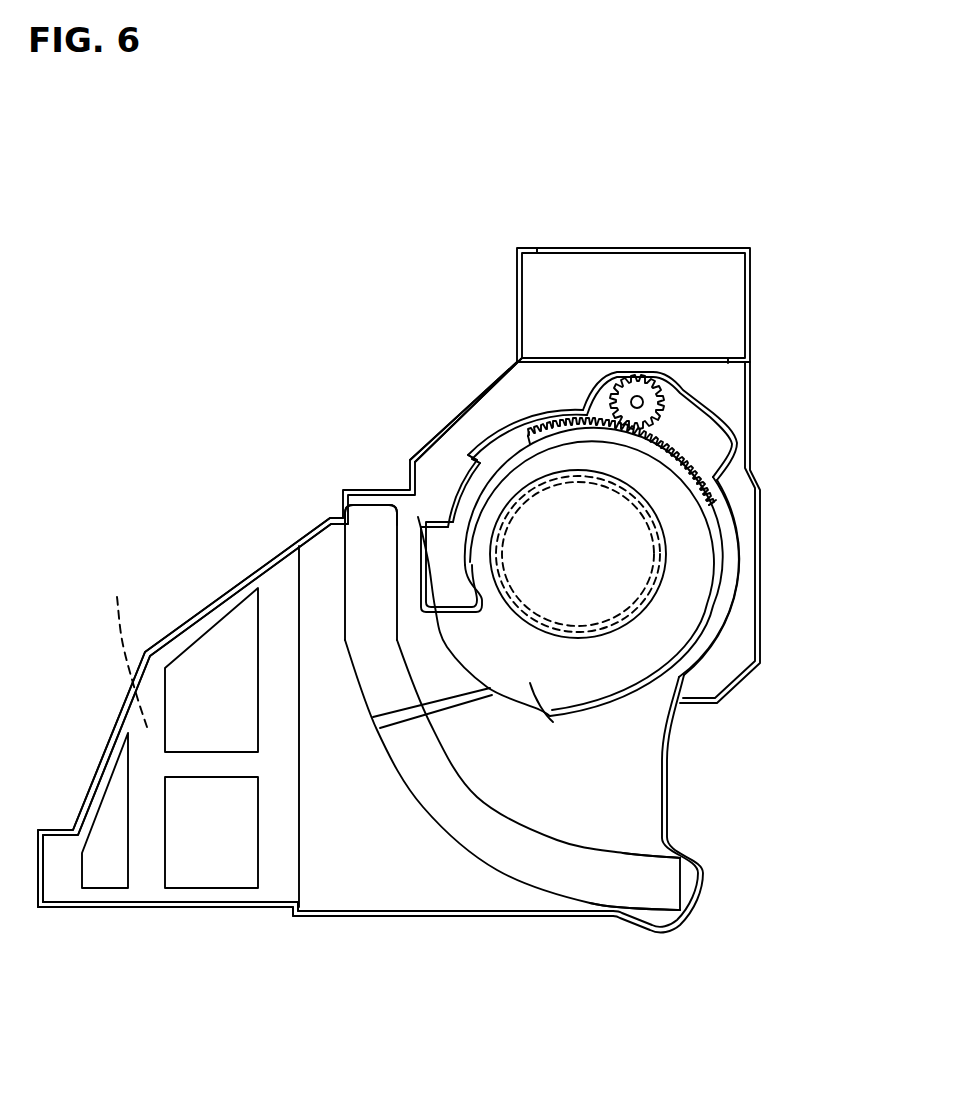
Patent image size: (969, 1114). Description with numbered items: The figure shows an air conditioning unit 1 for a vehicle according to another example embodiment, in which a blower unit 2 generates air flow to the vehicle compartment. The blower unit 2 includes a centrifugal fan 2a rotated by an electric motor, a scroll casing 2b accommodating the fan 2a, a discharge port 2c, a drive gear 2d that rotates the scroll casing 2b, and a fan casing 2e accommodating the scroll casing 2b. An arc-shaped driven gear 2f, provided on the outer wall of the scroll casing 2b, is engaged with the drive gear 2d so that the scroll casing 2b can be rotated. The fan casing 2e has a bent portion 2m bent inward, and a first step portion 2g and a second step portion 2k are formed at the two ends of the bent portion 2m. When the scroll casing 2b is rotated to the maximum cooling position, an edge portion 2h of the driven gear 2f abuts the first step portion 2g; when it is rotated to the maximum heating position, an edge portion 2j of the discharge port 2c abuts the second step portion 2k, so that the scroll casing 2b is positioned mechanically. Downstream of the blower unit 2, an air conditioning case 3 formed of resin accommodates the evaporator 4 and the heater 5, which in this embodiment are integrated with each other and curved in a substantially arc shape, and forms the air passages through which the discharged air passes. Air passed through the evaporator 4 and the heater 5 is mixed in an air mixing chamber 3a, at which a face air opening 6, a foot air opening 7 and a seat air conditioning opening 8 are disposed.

The air conditioning unit 1 is at (757, 272).
The blower unit 2 is at (737, 500).
The fan 2a is at (655, 578).
The scroll casing 2b is at (700, 650).
The discharge port 2c is at (560, 725).
The drive gear 2d is at (645, 402).
The fan casing 2e is at (466, 452).
The driven gear 2f is at (690, 460).
The first step portion 2g is at (453, 455).
The edge portion 2h is at (530, 440).
The edge portion 2j is at (368, 550).
The second step portion 2k is at (430, 518).
The bent portion 2m is at (440, 480).
The air conditioning case 3 is at (300, 520).
The air mixing chamber 3a is at (125, 648).
The evaporator 4 is at (660, 868).
The heater 5 is at (340, 515).
The face air opening 6 is at (220, 860).
The foot air opening 7 is at (208, 663).
The seat air conditioning opening 8 is at (105, 858).